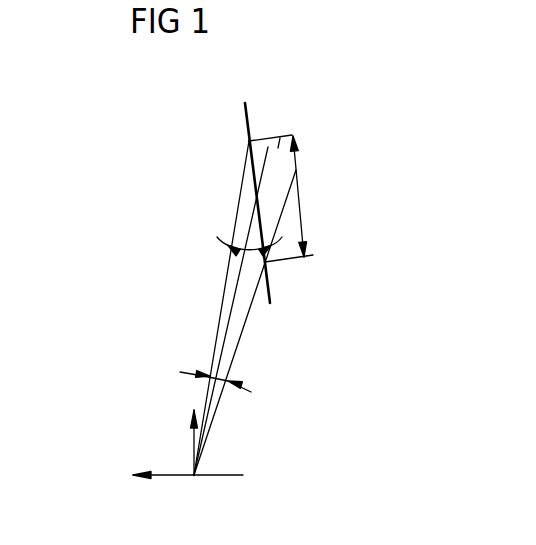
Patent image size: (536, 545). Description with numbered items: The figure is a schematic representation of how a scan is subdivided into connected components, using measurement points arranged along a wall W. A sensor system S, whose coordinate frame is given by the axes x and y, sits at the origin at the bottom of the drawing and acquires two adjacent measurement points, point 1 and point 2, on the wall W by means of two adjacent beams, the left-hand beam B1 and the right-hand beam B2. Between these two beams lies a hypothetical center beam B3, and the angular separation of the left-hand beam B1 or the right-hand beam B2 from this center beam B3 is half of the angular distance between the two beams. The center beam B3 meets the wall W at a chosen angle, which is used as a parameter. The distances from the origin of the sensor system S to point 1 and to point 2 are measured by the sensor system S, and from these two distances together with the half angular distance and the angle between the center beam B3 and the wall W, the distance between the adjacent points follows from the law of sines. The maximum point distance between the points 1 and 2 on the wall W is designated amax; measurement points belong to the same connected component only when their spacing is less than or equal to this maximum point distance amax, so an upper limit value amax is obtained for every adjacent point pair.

The point 1 is at (249, 141).
The point 2 is at (267, 263).
The wall W is at (244, 104).
The hypothetical center beam B3 is at (283, 135).
The left-hand beam B1 is at (220, 308).
The right-hand beam B2 is at (243, 328).
The maximum point distance amax is at (312, 199).
The axis x is at (188, 489).
The axis y is at (186, 437).
The sensor system S is at (227, 496).